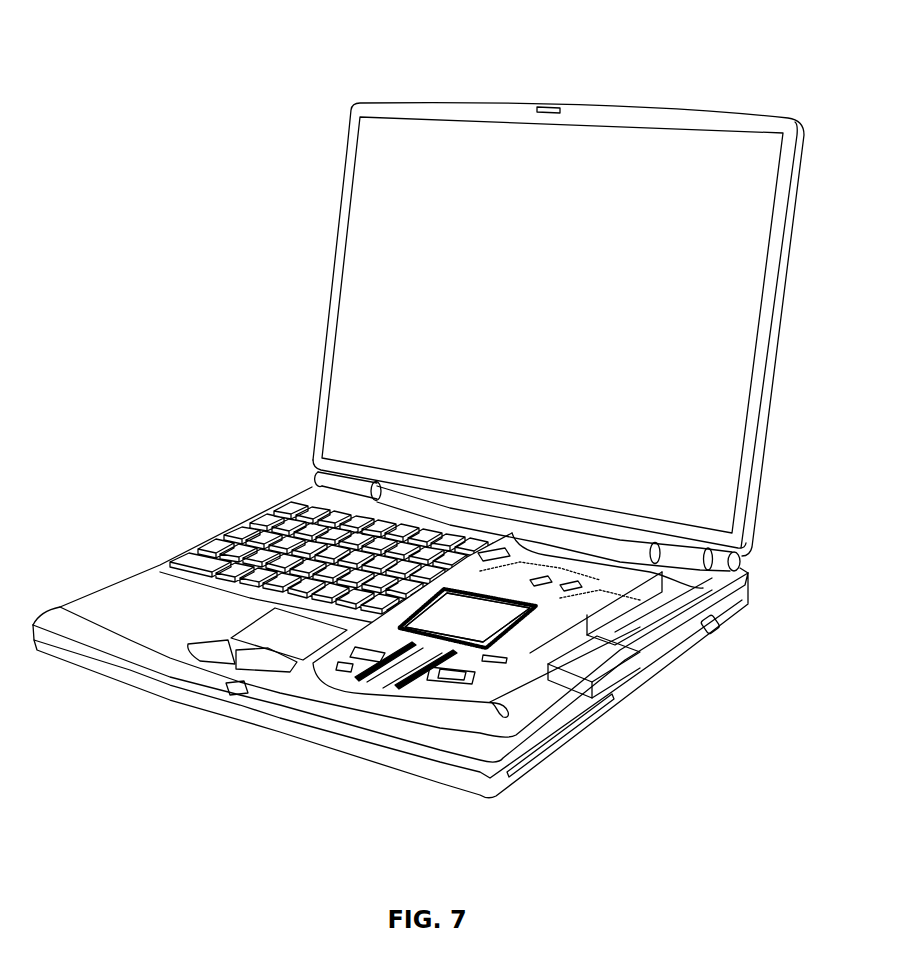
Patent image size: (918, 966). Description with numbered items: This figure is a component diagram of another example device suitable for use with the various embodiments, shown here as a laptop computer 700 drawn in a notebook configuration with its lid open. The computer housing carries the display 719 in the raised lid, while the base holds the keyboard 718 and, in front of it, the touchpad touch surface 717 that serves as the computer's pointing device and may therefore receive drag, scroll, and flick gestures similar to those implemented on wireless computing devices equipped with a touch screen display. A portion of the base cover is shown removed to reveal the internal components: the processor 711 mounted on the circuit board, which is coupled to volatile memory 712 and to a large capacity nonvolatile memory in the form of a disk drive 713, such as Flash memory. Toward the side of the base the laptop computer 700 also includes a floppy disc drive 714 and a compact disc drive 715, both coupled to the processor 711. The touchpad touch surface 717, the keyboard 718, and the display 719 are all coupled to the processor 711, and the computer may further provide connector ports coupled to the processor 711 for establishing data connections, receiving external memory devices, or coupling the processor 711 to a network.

The laptop computer 700 is at (713, 88).
The processor 711 is at (479, 626).
The volatile memory 712 is at (402, 665).
The disk drive 713 is at (517, 703).
The floppy disc drive 714 is at (585, 658).
The compact disc (CD) drive 715 is at (650, 603).
The touchpad touch surface 717 is at (250, 632).
The keyboard 718 is at (207, 552).
The display 719 is at (737, 491).